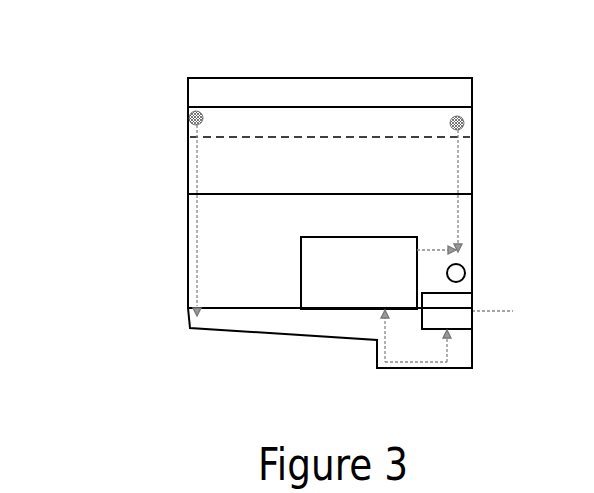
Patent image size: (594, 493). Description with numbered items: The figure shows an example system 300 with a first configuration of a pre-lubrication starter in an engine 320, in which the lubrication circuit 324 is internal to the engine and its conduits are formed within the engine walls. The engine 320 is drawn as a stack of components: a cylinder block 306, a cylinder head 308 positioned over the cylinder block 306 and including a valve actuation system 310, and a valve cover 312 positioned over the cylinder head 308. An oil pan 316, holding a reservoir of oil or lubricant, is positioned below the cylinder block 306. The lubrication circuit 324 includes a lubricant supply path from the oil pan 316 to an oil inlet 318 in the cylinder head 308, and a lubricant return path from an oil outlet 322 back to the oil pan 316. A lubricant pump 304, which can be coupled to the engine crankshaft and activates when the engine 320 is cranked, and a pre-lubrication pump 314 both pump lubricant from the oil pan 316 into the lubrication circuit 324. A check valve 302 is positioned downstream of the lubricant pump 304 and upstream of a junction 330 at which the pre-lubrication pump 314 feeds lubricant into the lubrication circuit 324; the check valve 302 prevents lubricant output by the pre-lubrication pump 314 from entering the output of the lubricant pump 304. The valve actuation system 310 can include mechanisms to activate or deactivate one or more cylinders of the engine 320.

The system 300 is at (498, 84).
The check valve 302 is at (465, 273).
The lubricant pump 304 is at (460, 320).
The cylinder block 306 is at (350, 226).
The cylinder head 308 is at (350, 169).
The valve actuation system 310 is at (432, 119).
The valve cover 312 is at (352, 97).
The pre-lubrication pump 314 is at (300, 282).
The oil pan 316 is at (288, 322).
The oil inlet 318 is at (462, 123).
The engine 320 is at (185, 243).
The oil outlet 322 is at (197, 114).
The lubrication circuit 324 is at (196, 209).
The junction 330 is at (458, 250).